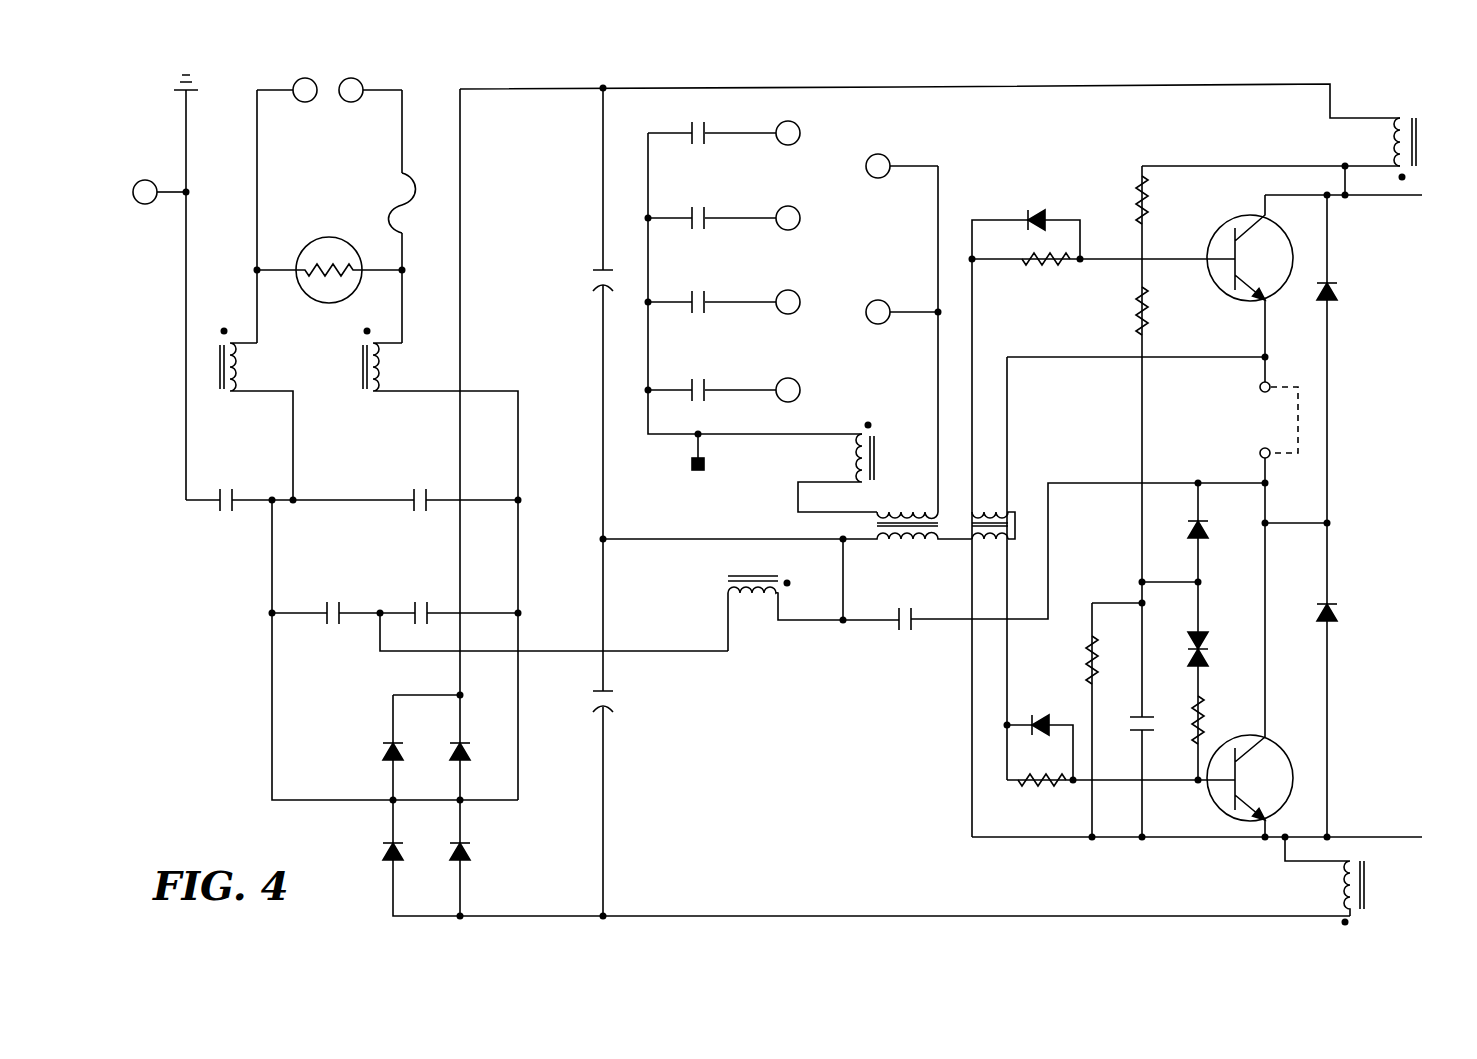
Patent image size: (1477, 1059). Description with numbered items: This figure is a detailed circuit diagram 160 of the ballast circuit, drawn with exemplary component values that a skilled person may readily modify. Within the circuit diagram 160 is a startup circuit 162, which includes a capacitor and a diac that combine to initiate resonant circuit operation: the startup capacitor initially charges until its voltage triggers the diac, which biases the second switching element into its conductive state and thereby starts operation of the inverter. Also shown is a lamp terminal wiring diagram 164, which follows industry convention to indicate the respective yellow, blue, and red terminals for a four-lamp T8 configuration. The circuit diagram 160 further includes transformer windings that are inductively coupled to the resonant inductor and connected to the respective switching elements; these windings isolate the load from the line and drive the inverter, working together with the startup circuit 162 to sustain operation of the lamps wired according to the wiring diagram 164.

The detailed circuit diagram 160 is at (819, 80).
The startup circuit 162 is at (1078, 536).
The lamp terminal wiring diagram 164 is at (845, 254).